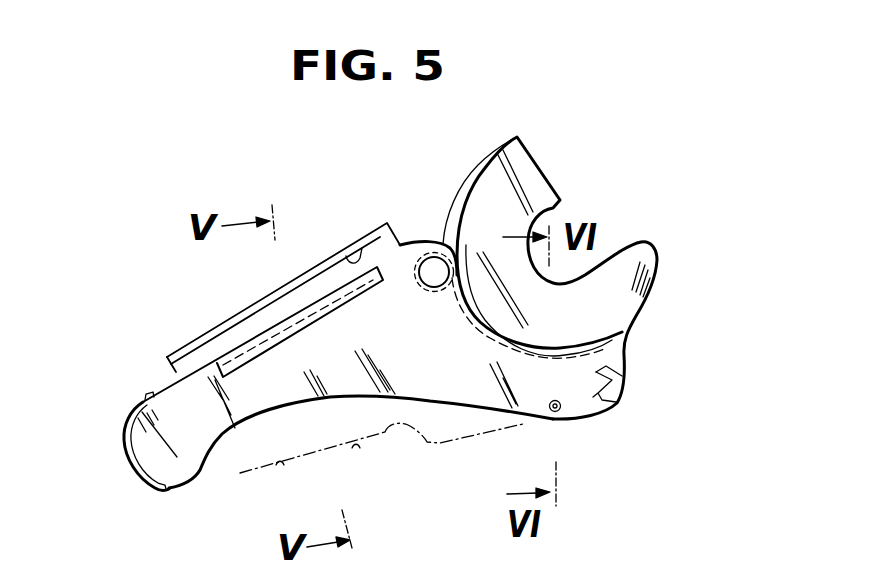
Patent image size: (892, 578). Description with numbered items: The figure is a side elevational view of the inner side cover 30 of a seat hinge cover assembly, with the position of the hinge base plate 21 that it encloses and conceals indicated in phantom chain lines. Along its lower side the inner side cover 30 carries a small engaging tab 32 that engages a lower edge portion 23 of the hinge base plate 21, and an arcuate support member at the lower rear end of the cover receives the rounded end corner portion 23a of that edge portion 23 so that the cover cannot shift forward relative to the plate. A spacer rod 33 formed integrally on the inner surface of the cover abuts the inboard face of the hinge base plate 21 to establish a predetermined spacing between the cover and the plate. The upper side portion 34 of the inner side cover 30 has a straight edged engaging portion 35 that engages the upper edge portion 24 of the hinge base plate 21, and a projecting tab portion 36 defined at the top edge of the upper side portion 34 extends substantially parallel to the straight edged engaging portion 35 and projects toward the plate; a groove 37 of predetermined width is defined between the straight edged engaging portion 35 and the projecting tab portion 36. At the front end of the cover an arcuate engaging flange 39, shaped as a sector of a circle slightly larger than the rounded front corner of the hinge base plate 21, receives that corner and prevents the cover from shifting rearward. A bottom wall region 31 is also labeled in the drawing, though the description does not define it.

The hinge base plate 21 is at (578, 345).
The edge portion 23 is at (523, 424).
The rounded end corner portion 23a is at (627, 371).
The upper edge portion 24 is at (204, 371).
The inner side cover 30 is at (660, 229).
The bottom wall 31 is at (473, 398).
The engaging tab 32 is at (617, 372).
The spacer rod 33 is at (574, 416).
The upper side portion 34 is at (174, 371).
The straight edged engaging portion 35 is at (279, 332).
The projecting tab portion 36 is at (318, 262).
The groove 37 is at (365, 240).
The arcuate engaging flange 39 is at (122, 457).